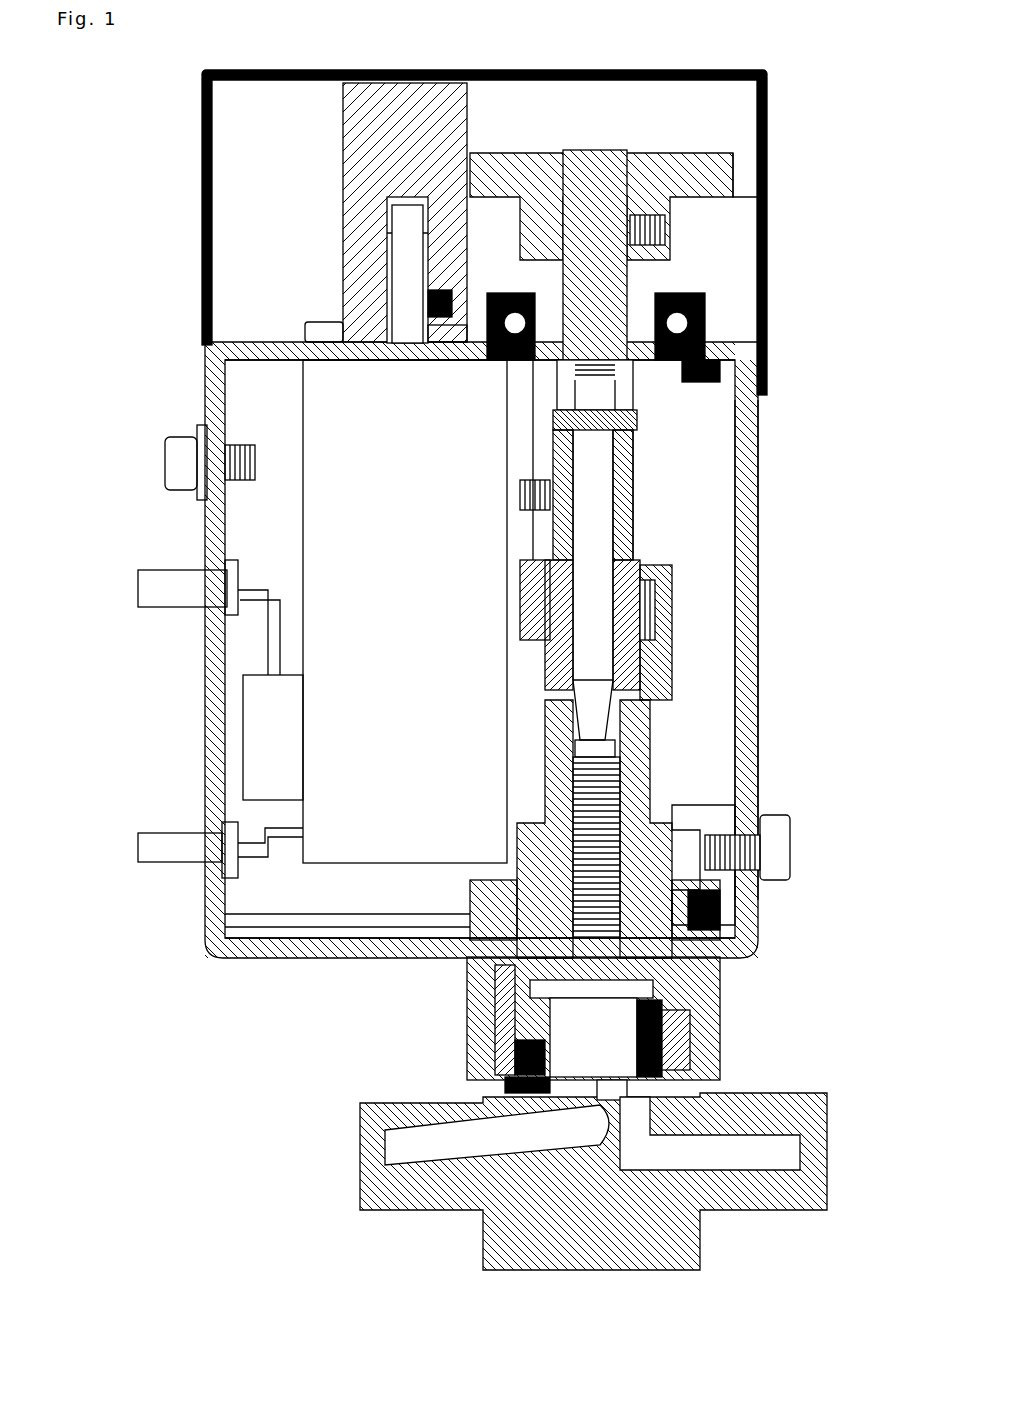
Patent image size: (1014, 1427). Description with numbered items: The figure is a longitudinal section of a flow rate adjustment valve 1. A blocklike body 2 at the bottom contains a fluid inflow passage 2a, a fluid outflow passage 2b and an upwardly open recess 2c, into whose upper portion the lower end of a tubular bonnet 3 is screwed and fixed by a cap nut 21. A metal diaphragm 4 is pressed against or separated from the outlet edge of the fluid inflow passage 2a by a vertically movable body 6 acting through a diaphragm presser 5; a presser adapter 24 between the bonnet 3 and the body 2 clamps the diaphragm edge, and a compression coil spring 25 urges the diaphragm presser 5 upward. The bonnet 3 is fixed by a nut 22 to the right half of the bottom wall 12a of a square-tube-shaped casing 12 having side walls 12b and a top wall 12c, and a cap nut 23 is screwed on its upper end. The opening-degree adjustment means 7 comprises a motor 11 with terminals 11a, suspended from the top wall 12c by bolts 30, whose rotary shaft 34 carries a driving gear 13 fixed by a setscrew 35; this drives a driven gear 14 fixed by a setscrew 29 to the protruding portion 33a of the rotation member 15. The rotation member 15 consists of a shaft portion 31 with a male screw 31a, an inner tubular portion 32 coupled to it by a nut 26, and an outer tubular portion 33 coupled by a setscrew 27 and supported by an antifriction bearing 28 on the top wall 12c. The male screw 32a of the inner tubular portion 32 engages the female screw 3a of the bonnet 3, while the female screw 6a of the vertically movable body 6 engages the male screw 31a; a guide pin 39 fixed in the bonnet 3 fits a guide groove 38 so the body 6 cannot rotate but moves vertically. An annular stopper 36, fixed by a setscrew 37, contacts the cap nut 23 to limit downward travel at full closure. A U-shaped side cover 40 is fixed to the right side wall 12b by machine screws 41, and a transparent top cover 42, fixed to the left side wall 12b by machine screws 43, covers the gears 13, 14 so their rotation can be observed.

The flow rate adjustment valve 1 is at (845, 236).
The body 2 is at (600, 1250).
The fluid inflow passage 2a is at (440, 1135).
The fluid outflow passage 2b is at (740, 1150).
The recess 2c is at (470, 1042).
The bonnet 3 is at (520, 968).
The female screw 3a is at (530, 735).
The metal diaphragm 4 is at (625, 1048).
The diaphragm presser 5 is at (600, 1012).
The vertically movable body 6 is at (705, 945).
The female screw 6a is at (468, 882).
The opening-degree adjustment means 7 is at (700, 150).
The motor 11 is at (333, 867).
The terminals 11a is at (160, 598).
The casing 12 is at (215, 790).
The bottom wall 12a is at (330, 953).
The side wall 12b is at (740, 690).
The top wall 12c is at (245, 345).
The driving gear 13 is at (400, 100).
The driven gear 14 is at (540, 165).
The rotation member 15 is at (889, 492).
The cap nut 21 is at (470, 1005).
The nut 22 is at (290, 957).
The cap nut 23 is at (670, 640).
The presser adapter 24 is at (660, 1060).
The compression coil spring 25 is at (480, 1080).
The nut 26 is at (620, 395).
The setscrew 27 is at (525, 495).
The antifriction bearing 28 is at (700, 302).
The setscrew 29 is at (680, 225).
The bolts 30 is at (412, 272).
The shaft portion 31 is at (600, 600).
The male screw 31a is at (610, 812).
The inner tubular portion 32 is at (640, 545).
The male screw 32a is at (535, 797).
The outer tubular portion 33 is at (650, 437).
The protruding portion 33a is at (600, 265).
The rotary shaft 34 is at (310, 328).
The setscrew 35 is at (430, 348).
The stopper 36 is at (665, 590).
The setscrew 37 is at (530, 580).
The guide groove 38 is at (680, 900).
The guide pin 39 is at (630, 850).
The side cover 40 is at (740, 730).
The machine screws 41 is at (795, 855).
The top cover 42 is at (768, 190).
The machine screws 43 is at (185, 458).